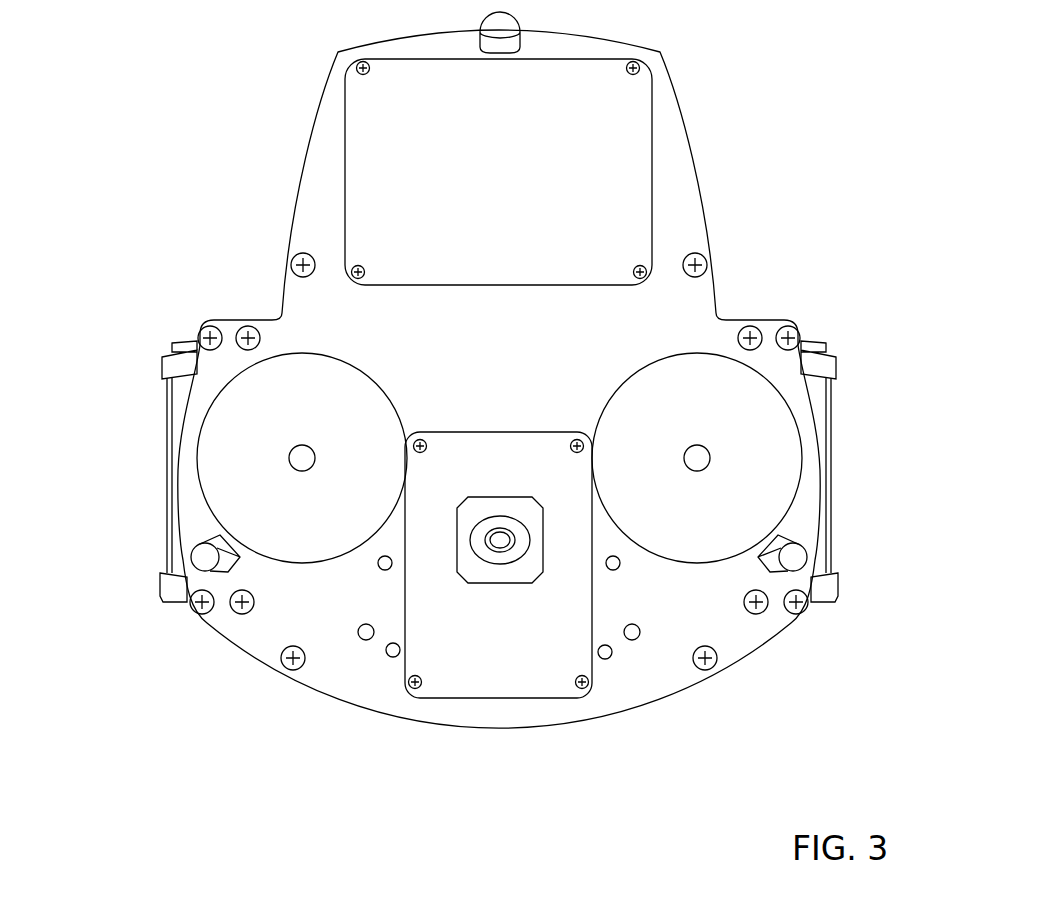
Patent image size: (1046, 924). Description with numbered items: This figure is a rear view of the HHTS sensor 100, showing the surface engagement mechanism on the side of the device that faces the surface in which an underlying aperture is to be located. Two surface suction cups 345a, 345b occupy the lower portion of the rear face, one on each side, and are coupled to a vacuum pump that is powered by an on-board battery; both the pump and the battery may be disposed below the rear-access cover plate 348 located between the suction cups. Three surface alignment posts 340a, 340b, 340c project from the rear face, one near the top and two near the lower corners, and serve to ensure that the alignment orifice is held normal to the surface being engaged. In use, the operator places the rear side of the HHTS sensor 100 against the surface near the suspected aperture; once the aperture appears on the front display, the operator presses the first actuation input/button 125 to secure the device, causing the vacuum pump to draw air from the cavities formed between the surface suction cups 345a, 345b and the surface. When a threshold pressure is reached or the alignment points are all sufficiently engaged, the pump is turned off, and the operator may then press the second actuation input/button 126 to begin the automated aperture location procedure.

The HHTS sensor 100 is at (133, 685).
The first actuation input/button 125 is at (814, 340).
The second actuation input/button 126 is at (171, 340).
The surface alignment post 340a is at (500, 55).
The surface alignment post 340b is at (243, 563).
The surface alignment post 340c is at (768, 563).
The surface suction cup 345a is at (233, 447).
The surface suction cup 345b is at (758, 453).
The rear-access cover plate 348 is at (510, 620).